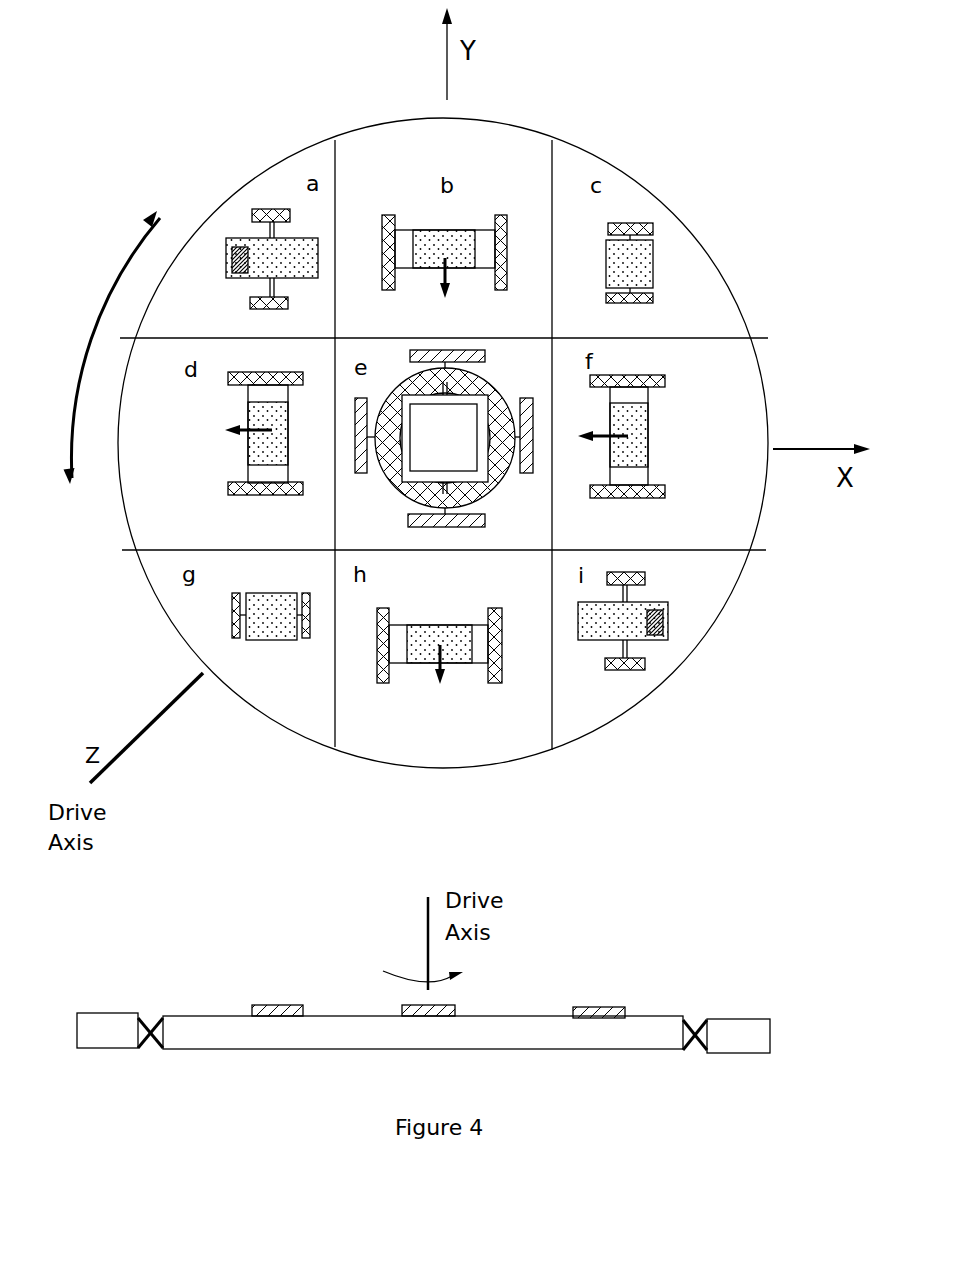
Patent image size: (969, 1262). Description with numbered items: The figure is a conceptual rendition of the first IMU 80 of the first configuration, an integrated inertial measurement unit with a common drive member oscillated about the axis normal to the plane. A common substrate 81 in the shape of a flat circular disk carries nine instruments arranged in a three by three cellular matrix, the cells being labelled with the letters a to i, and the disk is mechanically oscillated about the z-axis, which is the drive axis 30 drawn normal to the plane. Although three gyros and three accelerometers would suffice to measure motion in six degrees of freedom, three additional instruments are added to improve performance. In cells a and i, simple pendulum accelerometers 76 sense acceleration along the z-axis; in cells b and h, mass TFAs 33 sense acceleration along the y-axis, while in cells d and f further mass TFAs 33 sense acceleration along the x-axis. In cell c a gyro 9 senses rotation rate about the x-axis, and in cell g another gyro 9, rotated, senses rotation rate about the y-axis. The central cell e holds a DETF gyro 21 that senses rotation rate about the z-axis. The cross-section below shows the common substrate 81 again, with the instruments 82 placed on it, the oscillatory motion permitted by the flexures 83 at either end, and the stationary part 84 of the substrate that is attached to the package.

The gyro 9 is at (643, 213).
The DETF gyro 21 is at (515, 495).
The drive axis 30 is at (130, 763).
The mass TFA 33 is at (481, 157).
The simple pendulum accelerometer 76 is at (237, 224).
The first IMU 80 is at (685, 80).
The common substrate 81 is at (623, 715).
The sensor block 82 is at (595, 1005).
The flexures 83 is at (697, 1022).
The stationary part 84 is at (748, 1038).